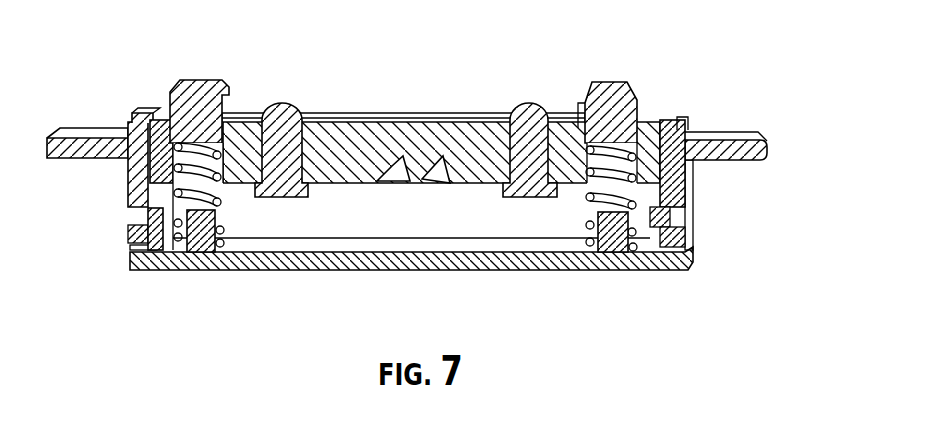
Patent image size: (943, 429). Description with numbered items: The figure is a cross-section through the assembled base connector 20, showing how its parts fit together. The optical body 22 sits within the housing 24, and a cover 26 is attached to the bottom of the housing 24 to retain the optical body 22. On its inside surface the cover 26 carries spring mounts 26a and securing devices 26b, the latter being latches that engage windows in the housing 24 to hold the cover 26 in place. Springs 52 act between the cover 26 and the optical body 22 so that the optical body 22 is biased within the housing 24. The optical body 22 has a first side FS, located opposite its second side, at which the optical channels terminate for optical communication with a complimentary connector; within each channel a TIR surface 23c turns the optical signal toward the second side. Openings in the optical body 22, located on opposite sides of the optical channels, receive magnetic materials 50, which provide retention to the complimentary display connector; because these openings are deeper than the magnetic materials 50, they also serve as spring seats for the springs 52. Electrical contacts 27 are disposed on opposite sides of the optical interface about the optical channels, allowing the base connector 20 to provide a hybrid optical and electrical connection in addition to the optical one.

The base connector 20 is at (786, 41).
The optical body 22 is at (158, 157).
The housing 24 is at (760, 140).
The first side FS is at (470, 116).
The electrical contacts 27 is at (282, 112).
The magnetic materials 50 is at (182, 107).
The springs 52 is at (175, 192).
The TIR surface 23c is at (387, 180).
The cover 26 is at (622, 265).
The spring mounts 26a is at (205, 252).
The securing devices 26b is at (152, 252).